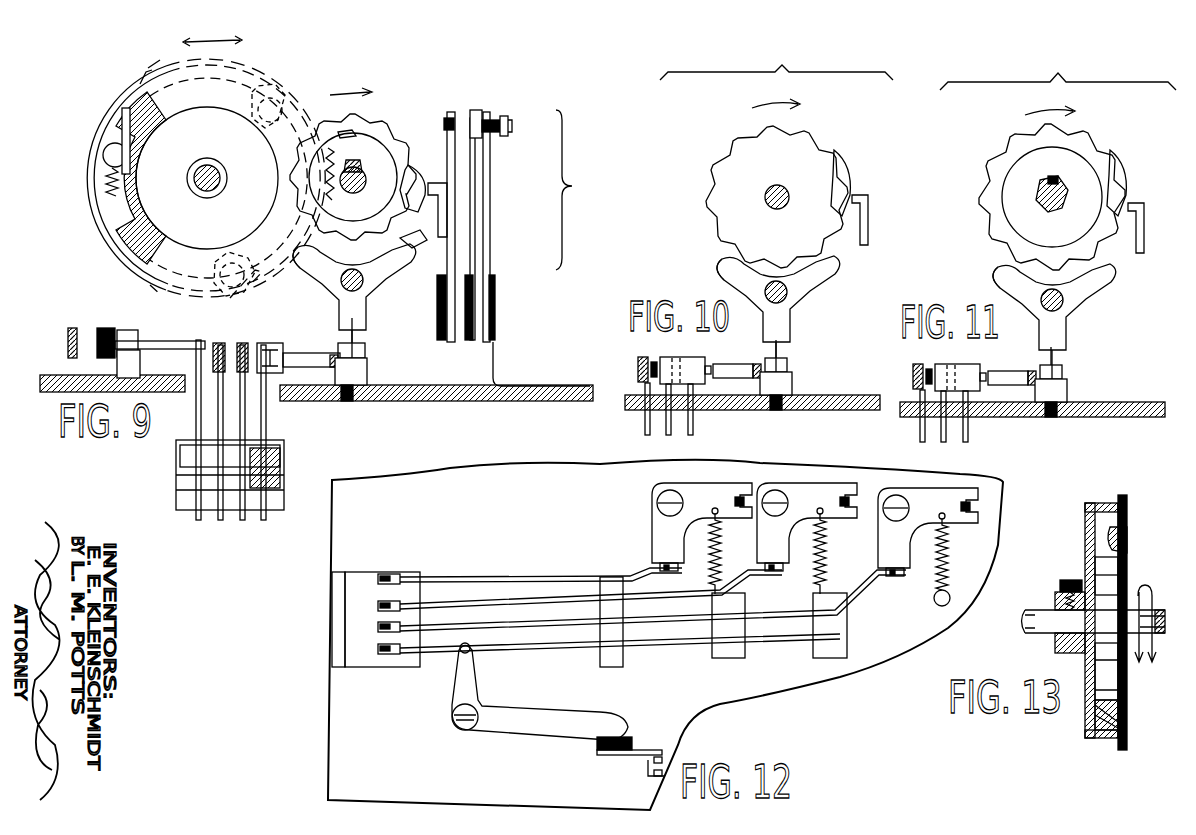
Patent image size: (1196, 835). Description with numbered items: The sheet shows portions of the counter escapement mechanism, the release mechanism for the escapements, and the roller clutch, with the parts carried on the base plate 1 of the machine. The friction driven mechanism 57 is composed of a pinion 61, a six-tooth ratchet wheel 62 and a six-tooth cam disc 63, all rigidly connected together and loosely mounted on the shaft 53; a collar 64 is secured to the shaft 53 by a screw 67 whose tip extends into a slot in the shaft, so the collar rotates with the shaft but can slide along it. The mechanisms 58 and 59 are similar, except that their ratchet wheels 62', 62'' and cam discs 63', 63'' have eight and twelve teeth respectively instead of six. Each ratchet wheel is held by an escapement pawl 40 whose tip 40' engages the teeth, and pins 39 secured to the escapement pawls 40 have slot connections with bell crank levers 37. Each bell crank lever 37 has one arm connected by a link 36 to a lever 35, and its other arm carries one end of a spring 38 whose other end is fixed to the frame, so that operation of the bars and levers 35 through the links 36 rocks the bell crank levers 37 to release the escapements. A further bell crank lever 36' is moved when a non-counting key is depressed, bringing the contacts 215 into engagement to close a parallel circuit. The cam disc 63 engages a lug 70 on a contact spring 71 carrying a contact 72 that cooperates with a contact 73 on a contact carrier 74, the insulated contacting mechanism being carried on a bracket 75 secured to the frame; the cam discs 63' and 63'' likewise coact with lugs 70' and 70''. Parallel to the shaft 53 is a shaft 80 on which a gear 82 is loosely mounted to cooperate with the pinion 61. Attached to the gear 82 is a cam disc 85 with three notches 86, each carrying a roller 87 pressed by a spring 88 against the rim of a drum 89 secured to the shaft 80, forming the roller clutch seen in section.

In FIG. 9, the base plate 1 is at (418, 402).
In FIG. 10, the base plate 1 is at (826, 412).
In FIG. 11, the base plate 1 is at (1119, 419).
In FIG. 9, the lever 35 is at (220, 426).
In FIG. 10, the lever 35 is at (672, 425).
In FIG. 11, the lever 35 is at (947, 432).
In FIG. 12, the lever 35 is at (378, 648).
In FIG. 9, the link 36 is at (178, 350).
In FIG. 10, the link 36 is at (666, 358).
In FIG. 11, the link 36 is at (941, 365).
In FIG. 12, the link 36 is at (653, 608).
In FIG. 12, the bell crank lever 36' is at (540, 700).
In FIG. 9, the bell crank lever 37 is at (313, 362).
In FIG. 10, the bell crank lever 37 is at (742, 354).
In FIG. 11, the bell crank lever 37 is at (1017, 361).
In FIG. 12, the bell crank lever 37 is at (660, 522).
In FIG. 12, the spring 38 is at (710, 584).
In FIG. 9, the pin 39 is at (358, 340).
In FIG. 10, the pin 39 is at (785, 352).
In FIG. 11, the pin 39 is at (1060, 359).
In FIG. 12, the pin 39 is at (748, 485).
In FIG. 9, the escapement pawl 40 is at (354, 302).
In FIG. 10, the escapement pawl 40 is at (778, 314).
In FIG. 11, the escapement pawl 40 is at (1054, 322).
In FIG. 9, the pawl lever tip 40' is at (304, 277).
In FIG. 10, the pawl lever tip 40' is at (700, 266).
In FIG. 11, the pawl lever tip 40' is at (976, 274).
In FIG. 9, the shaft 53 is at (370, 150).
In FIG. 10, the shaft 53 is at (765, 197).
In FIG. 11, the shaft 53 is at (1048, 206).
In FIG. 9, the friction driven mechanism 57 is at (582, 190).
In FIG. 10, the friction driven mechanism 58 is at (776, 61).
In FIG. 11, the friction driven mechanism 59 is at (1058, 69).
In FIG. 9, the pinion 61 is at (366, 194).
In FIG. 9, the ratchet wheel 62 is at (353, 167).
In FIG. 10, the ratchet wheel 62' is at (790, 192).
In FIG. 11, the ratchet wheel 62'' is at (1068, 193).
In FIG. 9, the cam disc 63 is at (423, 176).
In FIG. 10, the cam disc 63' is at (865, 183).
In FIG. 11, the cam disc 63'' is at (1141, 183).
In FIG. 9, the collar 64 is at (402, 240).
In FIG. 9, the screw 67 is at (340, 135).
In FIG. 9, the lug 70 is at (474, 227).
In FIG. 10, the lug 70' is at (881, 220).
In FIG. 11, the lug 70'' is at (1159, 228).
In FIG. 9, the contact spring 71 is at (476, 256).
In FIG. 9, the contact 72 is at (450, 117).
In FIG. 9, the contact 73 is at (476, 108).
In FIG. 9, the contact carrier 74 is at (491, 180).
In FIG. 9, the bracket 75 is at (496, 358).
In FIG. 9, the shaft 80 is at (207, 196).
In FIG. 13, the shaft 80 is at (1042, 612).
In FIG. 9, the gear 82 is at (316, 212).
In FIG. 13, the gear 82 is at (1152, 488).
In FIG. 9, the cam disc 85 is at (124, 230).
In FIG. 13, the cam disc 85 is at (1124, 703).
In FIG. 9, the notch 86 is at (122, 125).
In FIG. 9, the roller 87 is at (103, 155).
In FIG. 13, the roller 87 is at (1103, 582).
In FIG. 9, the spring 88 is at (104, 183).
In FIG. 13, the spring 88 is at (1055, 645).
In FIG. 9, the drum 89 is at (132, 250).
In FIG. 13, the drum 89 is at (1085, 511).
In FIG. 12, the contacts 215 is at (650, 762).